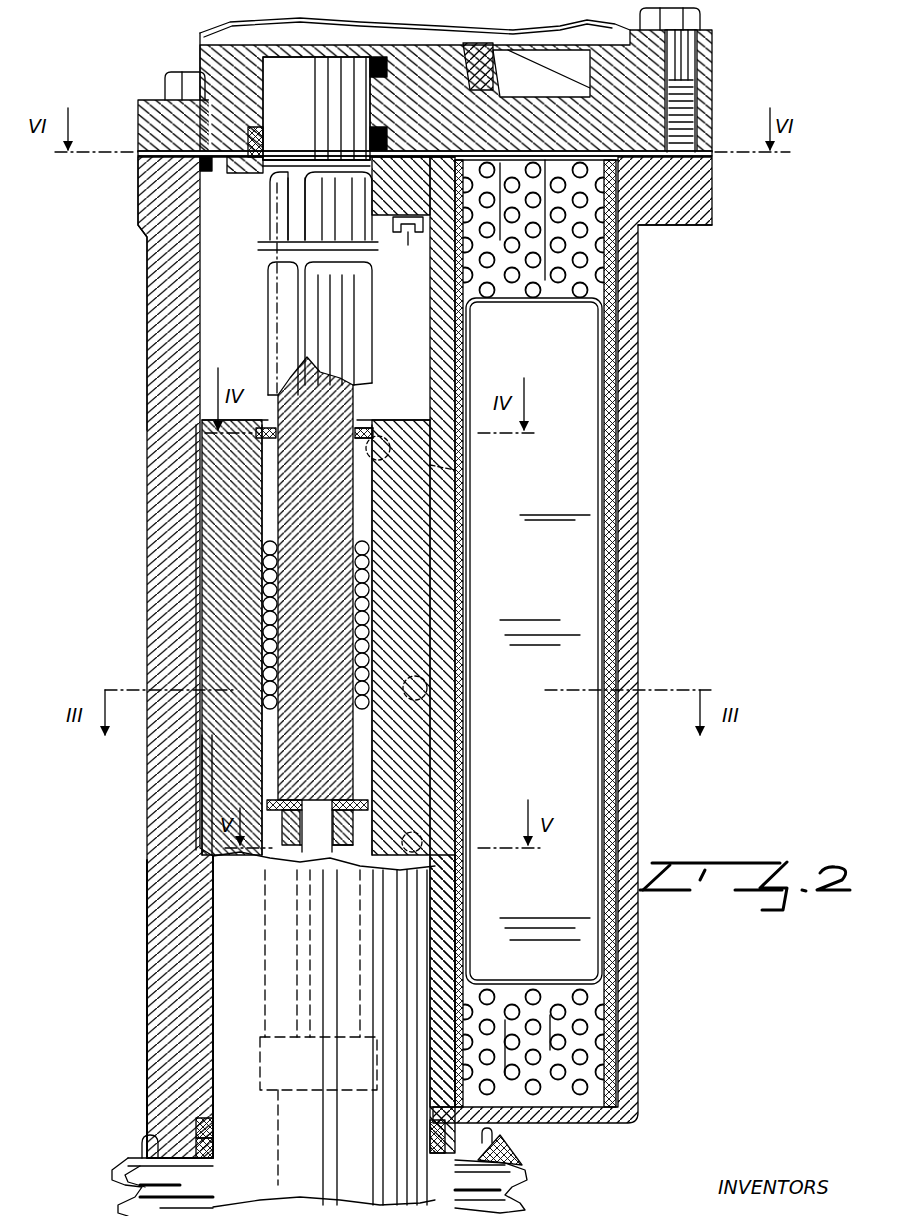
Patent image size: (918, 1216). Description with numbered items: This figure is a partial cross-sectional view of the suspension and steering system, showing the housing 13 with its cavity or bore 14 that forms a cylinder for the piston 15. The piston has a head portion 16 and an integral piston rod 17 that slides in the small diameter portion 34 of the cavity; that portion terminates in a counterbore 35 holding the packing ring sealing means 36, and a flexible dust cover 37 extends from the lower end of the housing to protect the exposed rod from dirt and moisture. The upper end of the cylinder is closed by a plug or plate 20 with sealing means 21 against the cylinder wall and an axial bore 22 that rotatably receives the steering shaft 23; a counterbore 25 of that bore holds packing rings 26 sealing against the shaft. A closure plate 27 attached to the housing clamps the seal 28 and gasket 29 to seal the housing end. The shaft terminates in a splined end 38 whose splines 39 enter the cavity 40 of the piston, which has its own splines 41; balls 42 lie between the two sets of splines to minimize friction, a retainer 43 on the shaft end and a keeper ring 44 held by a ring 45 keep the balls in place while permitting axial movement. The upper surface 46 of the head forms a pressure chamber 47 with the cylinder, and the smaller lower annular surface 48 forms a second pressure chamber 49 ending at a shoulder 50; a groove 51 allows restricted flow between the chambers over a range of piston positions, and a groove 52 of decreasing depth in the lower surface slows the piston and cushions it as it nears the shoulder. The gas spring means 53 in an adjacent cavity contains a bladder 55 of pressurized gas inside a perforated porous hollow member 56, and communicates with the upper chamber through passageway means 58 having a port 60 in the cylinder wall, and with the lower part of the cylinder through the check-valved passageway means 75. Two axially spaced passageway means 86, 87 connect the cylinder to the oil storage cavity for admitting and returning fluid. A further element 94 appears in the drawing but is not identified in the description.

The housing 13 is at (155, 217).
The cavity or bore 14 is at (205, 332).
The piston 15 is at (200, 500).
The head portion 16 is at (222, 487).
The piston rod 17 is at (248, 981).
The plug or plate 20 is at (235, 172).
The sealing means 21 is at (205, 170).
The axial bore 22 is at (380, 114).
The shaft 23 is at (300, 107).
The counterbore 25 is at (266, 168).
The packing rings 26 is at (210, 128).
The closure plate 27 is at (705, 108).
The seal 28 is at (640, 225).
The gasket 29 is at (630, 165).
The small diameter portion 34 is at (215, 922).
The counterbore 35 is at (200, 1130).
The sealing means 36 is at (200, 1143).
The flexible dust cover 37 is at (520, 1178).
The splined end 38 is at (352, 318).
The splines 39 is at (298, 318).
The cavity 40 is at (265, 750).
The splines 41 is at (365, 490).
The balls 42 is at (362, 625).
The retainer 43 is at (390, 800).
The keeper ring 44 is at (400, 448).
The ring 45 is at (368, 428).
The upper surface 46 is at (380, 440).
The pressure chamber 47 is at (247, 293).
The lower annular surface 48 is at (445, 718).
The second pressure chamber 49 is at (425, 745).
The shoulder 50 is at (430, 852).
The groove 51 is at (195, 548).
The groove of decreasing depth 52 is at (215, 695).
The gas spring means 53 is at (618, 478).
The bladder 55 is at (605, 990).
The porous hollow member 56 is at (612, 1072).
The passageway means 58 is at (405, 234).
The port 60 is at (409, 264).
The passageway means 75 is at (440, 676).
The passageway means 86 is at (455, 468).
The passageway means 87 is at (470, 808).
The canister 94 is at (612, 1030).